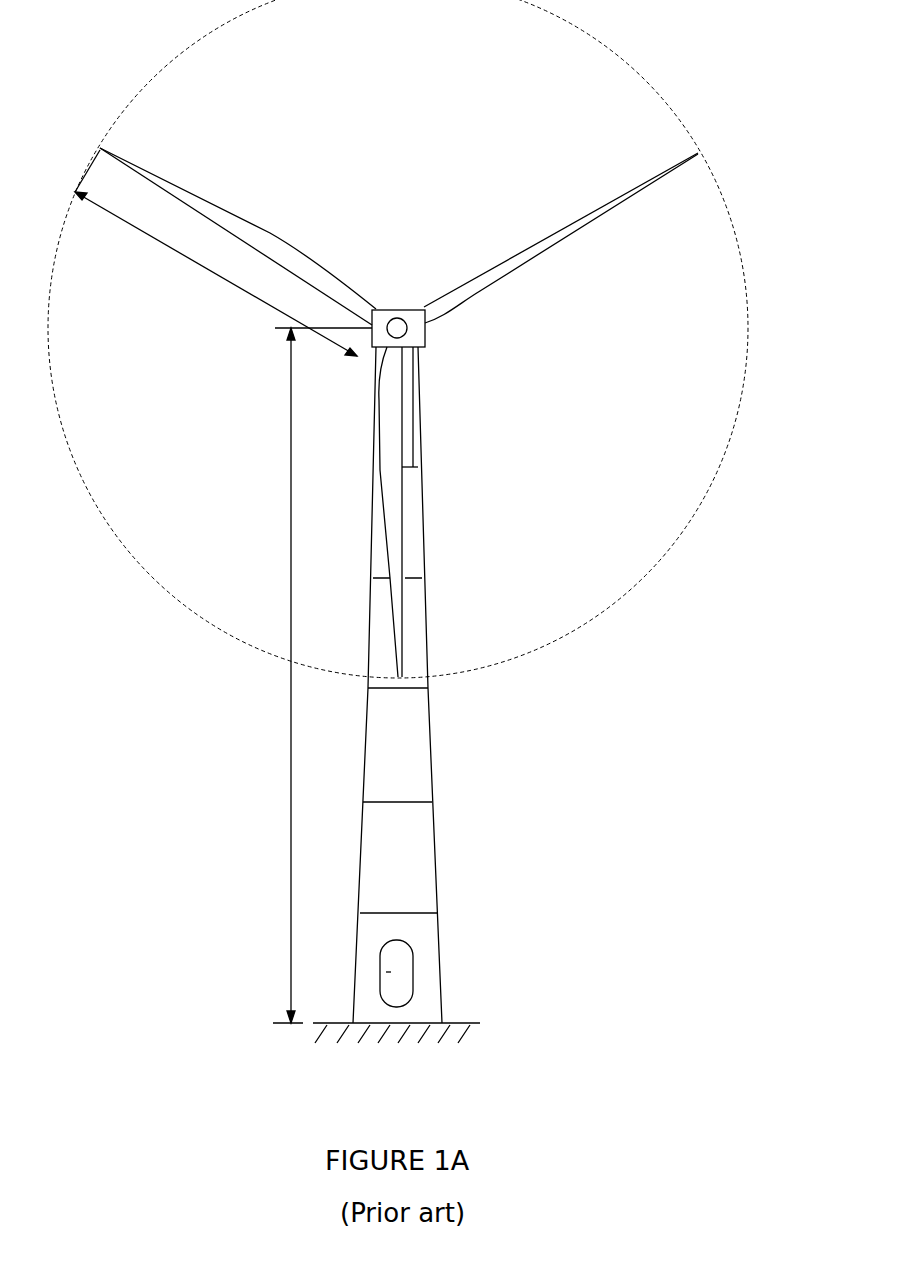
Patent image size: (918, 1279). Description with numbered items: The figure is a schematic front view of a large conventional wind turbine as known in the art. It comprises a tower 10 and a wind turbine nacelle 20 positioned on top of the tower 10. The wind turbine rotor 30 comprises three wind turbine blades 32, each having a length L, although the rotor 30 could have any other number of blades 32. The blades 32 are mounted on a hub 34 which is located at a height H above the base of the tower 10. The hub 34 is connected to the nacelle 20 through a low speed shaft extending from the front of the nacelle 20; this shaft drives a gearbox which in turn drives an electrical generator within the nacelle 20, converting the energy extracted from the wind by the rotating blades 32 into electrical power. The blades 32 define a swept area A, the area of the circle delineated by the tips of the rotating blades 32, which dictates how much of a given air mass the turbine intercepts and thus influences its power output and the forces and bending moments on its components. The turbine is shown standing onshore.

The tower 10 is at (430, 758).
The wind turbine nacelle 20 is at (425, 336).
The wind turbine rotor 30 is at (103, 140).
The wind turbine blades 32 is at (617, 206).
The hub 34 is at (400, 318).
The swept area A is at (633, 590).
The length L is at (216, 253).
The height H is at (320, 675).